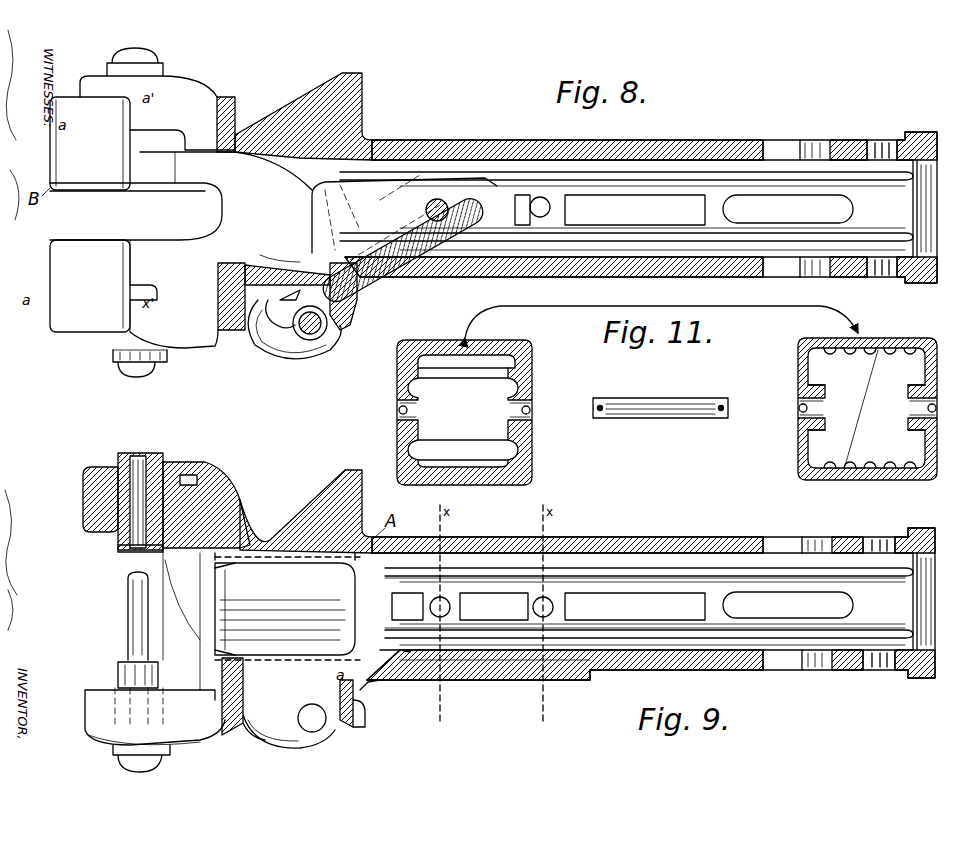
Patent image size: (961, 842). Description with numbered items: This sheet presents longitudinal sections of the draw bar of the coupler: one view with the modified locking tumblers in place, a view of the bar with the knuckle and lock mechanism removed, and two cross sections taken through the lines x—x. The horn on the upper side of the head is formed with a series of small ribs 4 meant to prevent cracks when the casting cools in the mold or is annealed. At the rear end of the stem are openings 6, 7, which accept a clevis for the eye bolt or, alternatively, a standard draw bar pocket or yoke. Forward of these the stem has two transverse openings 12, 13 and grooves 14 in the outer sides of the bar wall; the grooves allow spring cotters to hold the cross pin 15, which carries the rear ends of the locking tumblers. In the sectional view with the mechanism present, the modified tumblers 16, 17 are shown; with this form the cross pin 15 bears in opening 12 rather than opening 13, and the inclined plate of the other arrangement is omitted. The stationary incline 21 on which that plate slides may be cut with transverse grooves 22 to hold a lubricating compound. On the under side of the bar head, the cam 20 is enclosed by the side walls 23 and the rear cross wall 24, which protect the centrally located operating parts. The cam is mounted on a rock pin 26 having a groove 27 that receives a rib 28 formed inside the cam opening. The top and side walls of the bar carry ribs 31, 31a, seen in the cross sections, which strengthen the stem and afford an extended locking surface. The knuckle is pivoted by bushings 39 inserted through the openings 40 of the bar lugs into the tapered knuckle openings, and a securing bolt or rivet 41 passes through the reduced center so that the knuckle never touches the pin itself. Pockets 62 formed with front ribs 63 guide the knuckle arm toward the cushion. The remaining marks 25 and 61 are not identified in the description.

In FIG. 8, the ribs 4 is at (364, 144).
In FIG. 8, the opening 6 is at (782, 150).
In FIG. 9, the opening 6 is at (805, 550).
In FIG. 8, the opening 7 is at (884, 148).
In FIG. 9, the opening 7 is at (884, 545).
In FIG. 11, the transverse opening 12 is at (399, 412).
In FIG. 9, the transverse opening 12 is at (444, 606).
In FIG. 8, the transverse opening 13 is at (542, 206).
In FIG. 9, the transverse opening 13 is at (546, 606).
In FIG. 11, the grooves 14 is at (397, 404).
In FIG. 8, the cross pin 15 is at (447, 200).
In FIG. 11, the cross pin 15 is at (655, 398).
In FIG. 8, the tumbler 16 is at (385, 175).
In FIG. 8, the tumbler 17 is at (425, 185).
In FIG. 8, the cam 20 is at (262, 312).
In FIG. 8, the stationary incline 21 is at (365, 282).
In FIG. 9, the stationary incline 21 is at (372, 680).
In FIG. 9, the transverse grooves 22 is at (495, 680).
In FIG. 8, the side walls 23 is at (338, 335).
In FIG. 9, the side walls 23 is at (270, 720).
In FIG. 8, the rear cross wall 24 is at (357, 310).
In FIG. 9, the rear cross wall 24 is at (362, 716).
In FIG. 9, the pivot hole 25 is at (308, 728).
In FIG. 8, the rock pin 26 is at (300, 338).
In FIG. 8, the groove 27 is at (283, 332).
In FIG. 8, the rib 28 is at (275, 330).
In FIG. 11, the ribs 31 is at (508, 397).
In FIG. 9, the ribs 31 is at (612, 588).
In FIG. 11, the ribs 31a is at (864, 408).
In FIG. 8, the bushings 39 is at (117, 356).
In FIG. 9, the bushings 39 is at (118, 548).
In FIG. 8, the openings 40 is at (150, 64).
In FIG. 9, the openings 40 is at (84, 502).
In FIG. 8, the securing bolt or rivet 41 is at (138, 52).
In FIG. 9, the securing bolt or rivet 41 is at (130, 620).
In FIG. 9, the section line 61 is at (318, 557).
In FIG. 9, the pockets 62 is at (285, 609).
In FIG. 9, the front ribs 63 is at (265, 565).